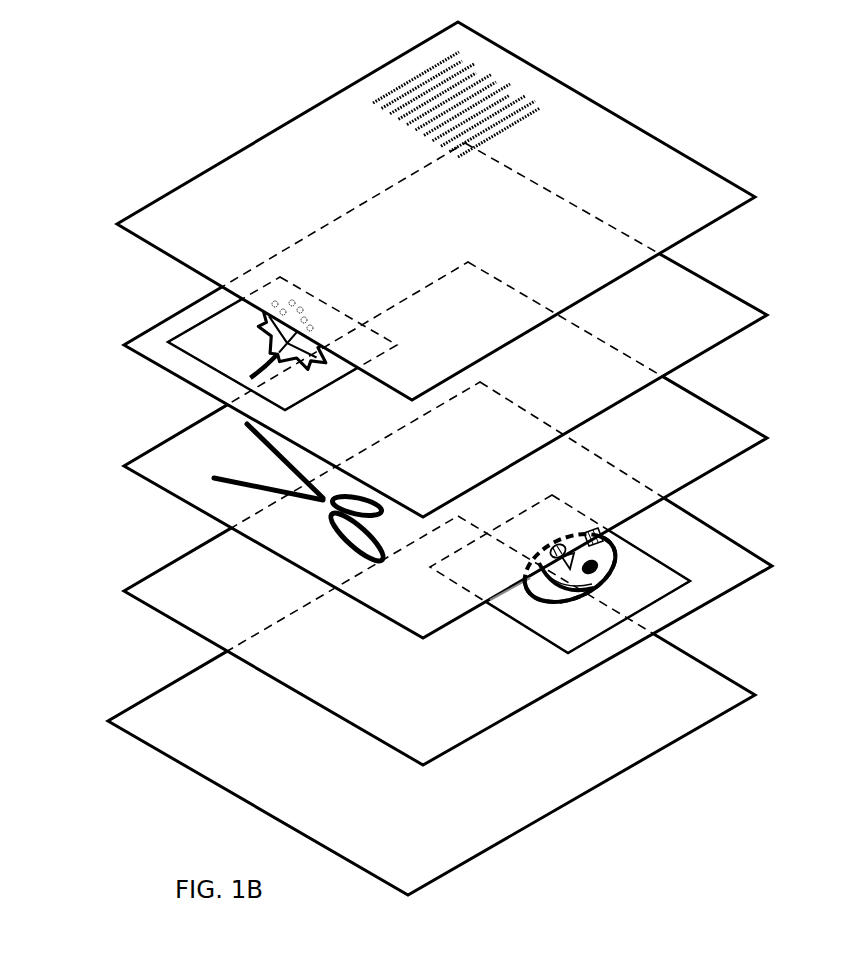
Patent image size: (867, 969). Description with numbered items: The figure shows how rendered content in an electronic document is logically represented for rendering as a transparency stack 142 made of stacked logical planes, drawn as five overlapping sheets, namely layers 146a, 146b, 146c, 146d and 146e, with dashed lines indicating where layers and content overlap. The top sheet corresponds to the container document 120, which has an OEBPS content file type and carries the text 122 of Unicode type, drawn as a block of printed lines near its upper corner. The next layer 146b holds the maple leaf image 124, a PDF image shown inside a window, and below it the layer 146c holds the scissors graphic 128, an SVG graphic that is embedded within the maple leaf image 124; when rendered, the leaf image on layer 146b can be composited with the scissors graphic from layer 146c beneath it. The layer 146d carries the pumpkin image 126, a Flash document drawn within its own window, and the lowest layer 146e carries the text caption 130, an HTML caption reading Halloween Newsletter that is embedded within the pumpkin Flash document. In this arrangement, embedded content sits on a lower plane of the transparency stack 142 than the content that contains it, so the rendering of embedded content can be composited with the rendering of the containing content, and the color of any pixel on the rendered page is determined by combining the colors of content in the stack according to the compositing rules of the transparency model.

The document 120 is at (448, 211).
The text 122 is at (502, 72).
The maple leaf image 124 is at (215, 355).
The pumpkin image 126 is at (527, 628).
The scissors graphic 128 is at (250, 488).
The text caption 130 is at (645, 708).
The transparency stack 142 is at (454, 458).
The layer 146a is at (774, 192).
The layer 146b is at (452, 330).
The layer 146c is at (478, 450).
The layer 146d is at (489, 573).
The layer 146e is at (476, 705).